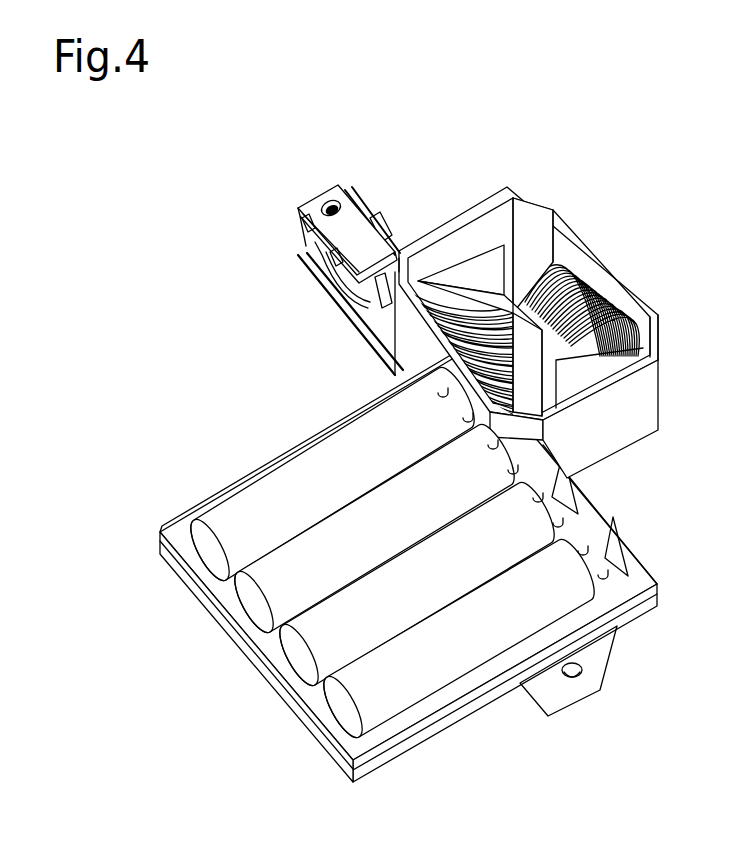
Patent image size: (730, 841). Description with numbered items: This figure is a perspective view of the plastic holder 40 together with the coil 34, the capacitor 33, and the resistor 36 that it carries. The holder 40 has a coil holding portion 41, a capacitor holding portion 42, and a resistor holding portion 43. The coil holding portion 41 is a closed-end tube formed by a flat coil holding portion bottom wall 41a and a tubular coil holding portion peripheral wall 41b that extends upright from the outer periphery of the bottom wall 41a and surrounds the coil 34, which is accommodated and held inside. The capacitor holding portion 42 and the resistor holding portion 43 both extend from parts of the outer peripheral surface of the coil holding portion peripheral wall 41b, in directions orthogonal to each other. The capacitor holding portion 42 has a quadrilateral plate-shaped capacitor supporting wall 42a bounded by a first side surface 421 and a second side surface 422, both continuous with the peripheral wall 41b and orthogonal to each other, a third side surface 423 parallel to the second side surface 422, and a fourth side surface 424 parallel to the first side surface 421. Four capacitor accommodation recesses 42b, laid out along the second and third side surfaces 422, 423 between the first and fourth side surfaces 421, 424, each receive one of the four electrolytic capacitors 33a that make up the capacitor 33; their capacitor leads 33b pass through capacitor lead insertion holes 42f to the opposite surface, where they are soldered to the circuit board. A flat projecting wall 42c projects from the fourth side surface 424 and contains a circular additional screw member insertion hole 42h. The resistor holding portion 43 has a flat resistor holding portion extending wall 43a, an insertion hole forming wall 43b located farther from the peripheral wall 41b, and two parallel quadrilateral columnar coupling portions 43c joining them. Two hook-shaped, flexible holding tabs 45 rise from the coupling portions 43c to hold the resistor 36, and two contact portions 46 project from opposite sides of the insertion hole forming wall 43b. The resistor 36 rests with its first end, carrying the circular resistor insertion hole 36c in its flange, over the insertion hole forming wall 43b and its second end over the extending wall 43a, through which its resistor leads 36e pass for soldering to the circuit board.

The holder 40 is at (545, 165).
The coil holding portion 41 is at (558, 200).
The coil holding portion bottom wall 41a is at (633, 452).
The coil holding portion peripheral wall 41b is at (647, 403).
The coil 34 is at (585, 282).
The capacitor 33 is at (413, 690).
The electrolytic capacitor 33a is at (383, 497).
The capacitor lead 33b is at (517, 473).
The capacitor holding portion 42 is at (655, 571).
The capacitor supporting wall 42a is at (617, 593).
The capacitor accommodation recess 42b is at (185, 540).
The projecting wall 42c is at (592, 672).
The additional screw member insertion hole 42h is at (572, 680).
The capacitor lead insertion hole 42f is at (622, 536).
The first side surface 421 is at (267, 467).
The second side surface 422 is at (594, 493).
The third side surface 423 is at (247, 647).
The fourth side surface 424 is at (490, 698).
The resistor holding portion 43 is at (302, 247).
The resistor holding portion extending wall 43a is at (383, 330).
The insertion hole forming wall 43b is at (367, 213).
The coupling portion 43c is at (403, 233).
The holding tab 45 is at (393, 222).
The contact portion 46 is at (352, 197).
The resistor 36 is at (303, 199).
The resistor insertion hole 36c is at (312, 202).
The resistor lead 36e is at (372, 298).